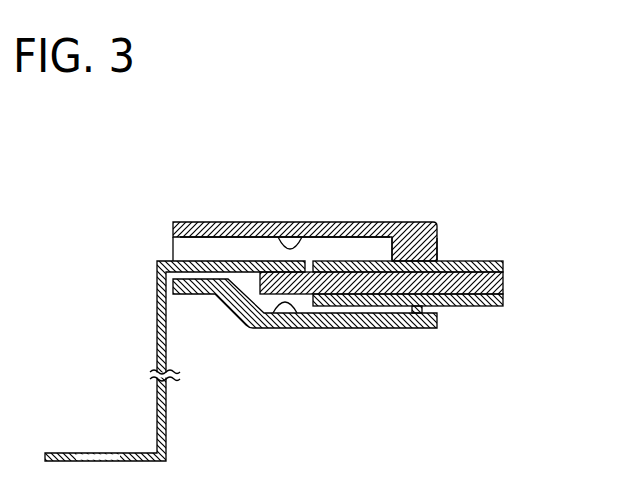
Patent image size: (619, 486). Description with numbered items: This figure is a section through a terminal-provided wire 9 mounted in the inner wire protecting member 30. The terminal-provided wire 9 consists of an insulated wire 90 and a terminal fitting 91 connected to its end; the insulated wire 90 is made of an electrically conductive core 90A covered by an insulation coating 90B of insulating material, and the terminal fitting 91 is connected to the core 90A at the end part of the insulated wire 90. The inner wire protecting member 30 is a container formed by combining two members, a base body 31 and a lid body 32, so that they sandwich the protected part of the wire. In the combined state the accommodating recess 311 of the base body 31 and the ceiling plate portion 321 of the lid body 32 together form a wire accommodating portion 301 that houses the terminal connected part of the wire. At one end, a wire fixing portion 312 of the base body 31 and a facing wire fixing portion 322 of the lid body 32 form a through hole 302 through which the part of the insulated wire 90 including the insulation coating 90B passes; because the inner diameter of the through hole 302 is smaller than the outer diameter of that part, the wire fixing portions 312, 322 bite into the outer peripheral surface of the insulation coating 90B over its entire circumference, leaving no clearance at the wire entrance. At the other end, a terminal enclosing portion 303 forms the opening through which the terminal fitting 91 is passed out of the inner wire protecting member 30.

The terminal-provided wire 9 is at (417, 277).
The insulated wire 90 is at (479, 261).
The core 90A is at (504, 268).
The insulation coating 90B is at (504, 297).
The terminal fitting 91 is at (168, 397).
The inner wire protecting member 30 is at (292, 269).
The base body 31 is at (289, 213).
The wire accommodating portion 301 is at (246, 244).
The through hole 302 is at (387, 256).
The terminal enclosing portion 303 is at (170, 246).
The accommodating recess 311 is at (275, 237).
The wire fixing portion 312 is at (438, 237).
The lid body 32 is at (333, 325).
The ceiling plate portion 321 is at (274, 313).
The wire fixing portion 322 is at (430, 328).